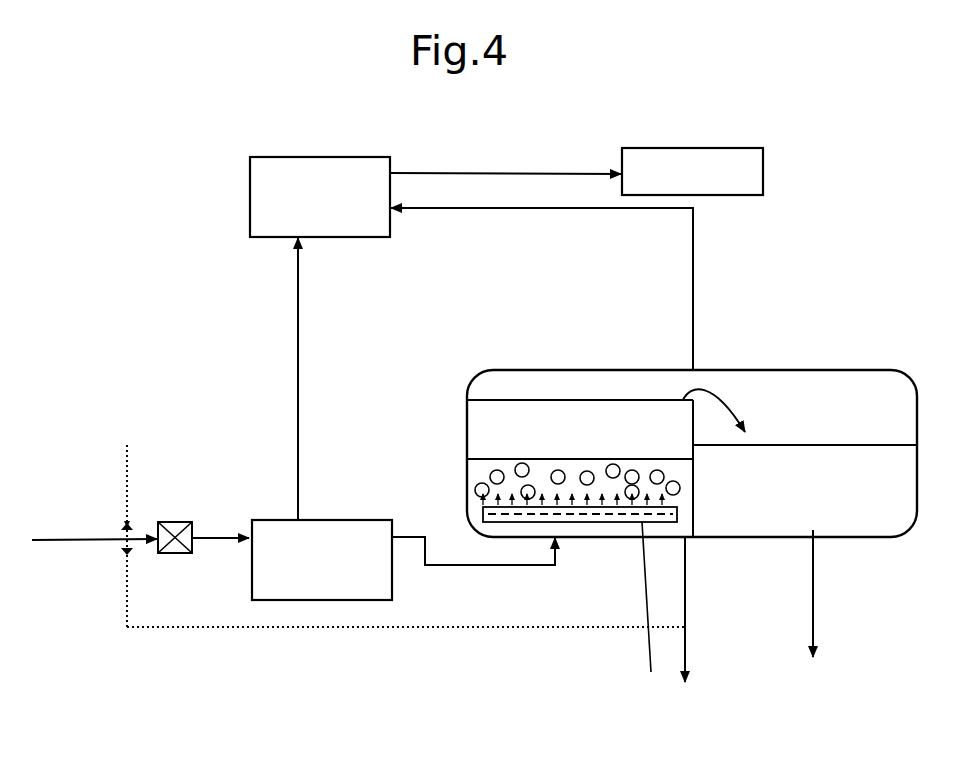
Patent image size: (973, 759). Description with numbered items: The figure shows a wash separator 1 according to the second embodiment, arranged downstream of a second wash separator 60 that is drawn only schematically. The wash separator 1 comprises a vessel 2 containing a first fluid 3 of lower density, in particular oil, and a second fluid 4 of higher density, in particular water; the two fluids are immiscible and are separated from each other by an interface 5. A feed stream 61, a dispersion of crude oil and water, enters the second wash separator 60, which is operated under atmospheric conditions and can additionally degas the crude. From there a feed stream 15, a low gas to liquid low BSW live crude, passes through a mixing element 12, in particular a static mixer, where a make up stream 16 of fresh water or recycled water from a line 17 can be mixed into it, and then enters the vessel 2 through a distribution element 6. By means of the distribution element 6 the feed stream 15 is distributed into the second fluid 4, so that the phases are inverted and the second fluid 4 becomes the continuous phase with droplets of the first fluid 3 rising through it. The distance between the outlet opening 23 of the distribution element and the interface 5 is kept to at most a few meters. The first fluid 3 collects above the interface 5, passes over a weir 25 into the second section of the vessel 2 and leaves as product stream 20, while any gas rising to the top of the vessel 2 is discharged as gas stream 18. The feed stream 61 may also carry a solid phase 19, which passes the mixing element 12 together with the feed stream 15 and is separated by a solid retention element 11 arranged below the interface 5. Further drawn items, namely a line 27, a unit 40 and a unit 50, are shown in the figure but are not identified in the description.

The wash separator 1 is at (843, 369).
The vessel 2 is at (917, 421).
The first fluid 3 is at (620, 416).
The second fluid 4 is at (560, 473).
The interface 5 is at (538, 495).
The distribution element 6 is at (478, 491).
The solid retention element 11 is at (649, 617).
The mixing element 12 is at (172, 532).
The feed stream 15 is at (493, 565).
The make up stream 16 is at (125, 478).
The line 17 is at (341, 628).
The gas stream 18 is at (695, 227).
The solid phase 19 is at (522, 565).
The product stream 20 is at (813, 578).
The outlet opening 23 is at (535, 488).
The weir 25 is at (693, 433).
The gas outlet line 27 is at (685, 600).
The control unit 40 is at (258, 188).
The display unit 50 is at (752, 162).
The second wash separator 60 is at (278, 530).
The feed stream 61 is at (82, 544).